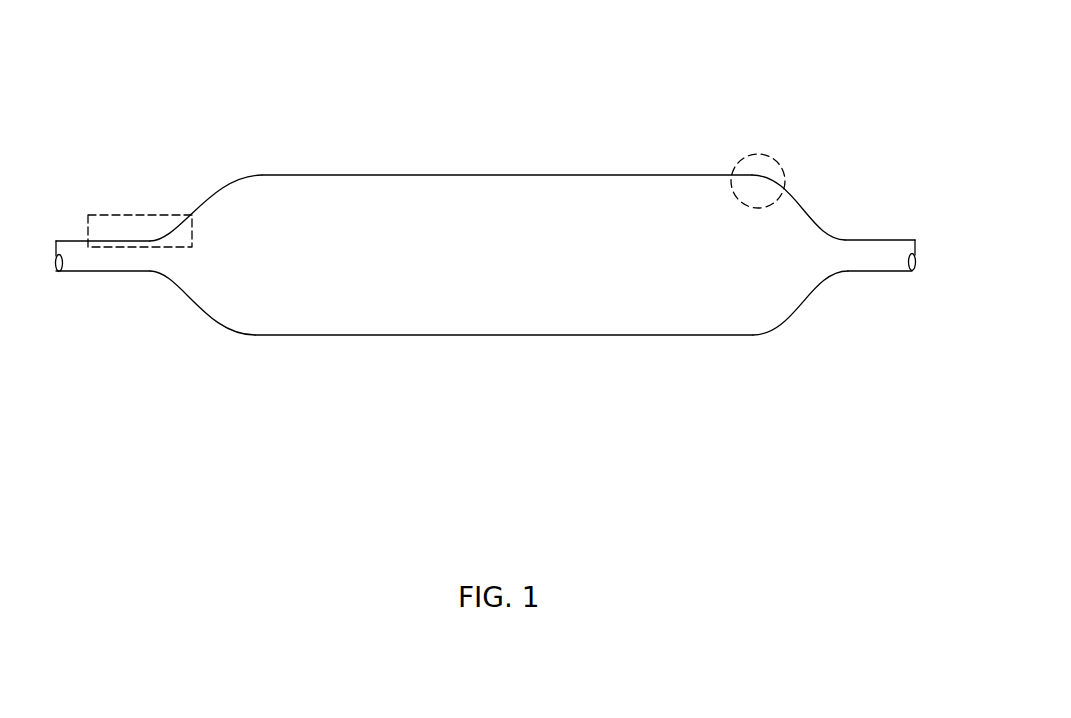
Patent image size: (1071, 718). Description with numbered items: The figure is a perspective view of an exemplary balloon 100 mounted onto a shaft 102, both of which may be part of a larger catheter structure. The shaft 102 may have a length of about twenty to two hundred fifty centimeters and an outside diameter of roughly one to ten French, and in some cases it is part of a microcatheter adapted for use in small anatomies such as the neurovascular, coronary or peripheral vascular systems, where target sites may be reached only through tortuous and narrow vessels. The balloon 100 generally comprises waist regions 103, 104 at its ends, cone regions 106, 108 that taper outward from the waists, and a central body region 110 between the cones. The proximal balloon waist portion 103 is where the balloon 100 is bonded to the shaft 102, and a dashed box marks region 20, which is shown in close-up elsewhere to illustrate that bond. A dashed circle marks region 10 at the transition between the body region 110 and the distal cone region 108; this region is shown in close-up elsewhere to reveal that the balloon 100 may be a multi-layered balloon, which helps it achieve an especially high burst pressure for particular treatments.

The balloon 100 is at (735, 62).
The region 10 is at (770, 155).
The region 20 is at (110, 215).
The shaft 102 is at (892, 245).
The proximal waist region 103 is at (103, 271).
The waist region 104 is at (853, 273).
The cone region 106 is at (218, 185).
The cone region 108 is at (810, 213).
The body region 110 is at (498, 175).